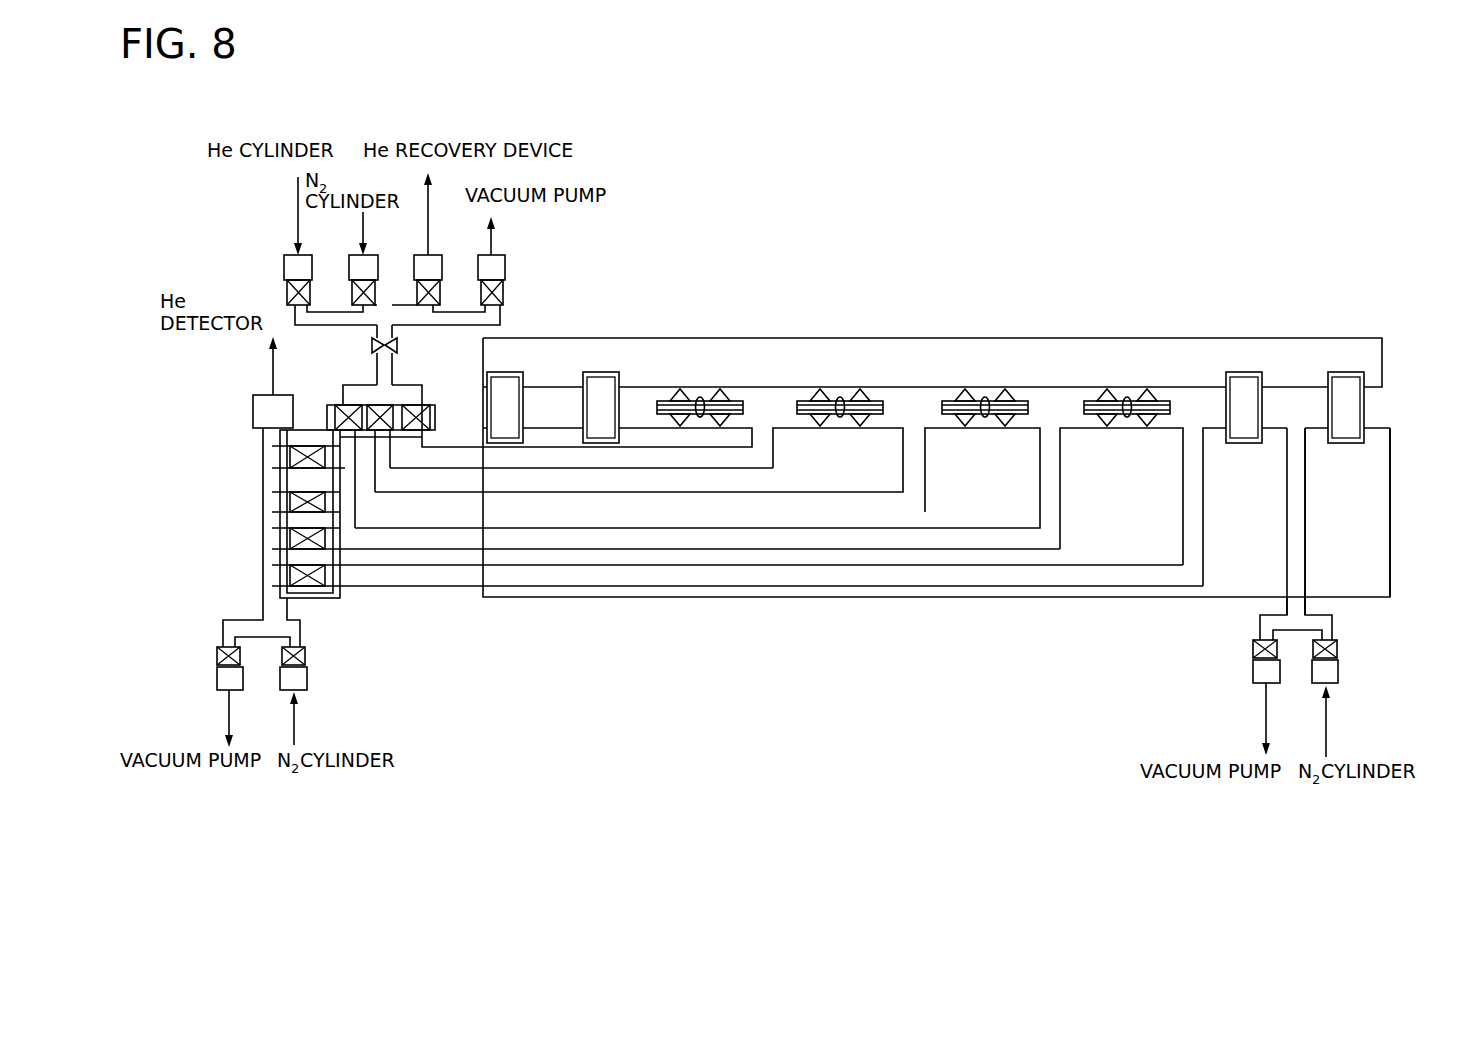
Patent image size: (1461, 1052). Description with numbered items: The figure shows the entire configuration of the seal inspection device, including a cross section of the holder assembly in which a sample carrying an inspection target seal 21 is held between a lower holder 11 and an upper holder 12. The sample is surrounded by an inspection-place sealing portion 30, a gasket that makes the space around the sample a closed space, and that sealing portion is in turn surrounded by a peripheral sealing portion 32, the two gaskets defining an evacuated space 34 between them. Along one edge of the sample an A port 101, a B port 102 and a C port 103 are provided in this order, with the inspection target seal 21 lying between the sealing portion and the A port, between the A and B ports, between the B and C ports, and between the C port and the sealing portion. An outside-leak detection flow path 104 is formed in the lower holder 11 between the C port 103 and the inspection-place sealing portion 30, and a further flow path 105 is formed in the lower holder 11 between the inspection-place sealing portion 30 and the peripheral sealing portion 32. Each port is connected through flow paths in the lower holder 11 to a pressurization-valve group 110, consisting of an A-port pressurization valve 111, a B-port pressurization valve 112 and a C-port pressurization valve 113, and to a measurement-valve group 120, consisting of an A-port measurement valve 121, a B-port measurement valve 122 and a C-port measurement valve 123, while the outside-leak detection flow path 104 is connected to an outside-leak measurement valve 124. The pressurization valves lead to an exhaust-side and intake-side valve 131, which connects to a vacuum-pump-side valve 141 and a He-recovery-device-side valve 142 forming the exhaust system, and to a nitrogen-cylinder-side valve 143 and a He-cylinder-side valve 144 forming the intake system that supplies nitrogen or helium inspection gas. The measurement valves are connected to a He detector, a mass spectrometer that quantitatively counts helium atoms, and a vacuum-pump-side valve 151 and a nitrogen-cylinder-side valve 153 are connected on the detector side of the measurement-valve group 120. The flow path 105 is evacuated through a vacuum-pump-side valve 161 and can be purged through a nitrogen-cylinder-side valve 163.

The lower holder 11 is at (1212, 597).
The upper holder 12 is at (1192, 355).
The inspection target seal 21 is at (692, 385).
The inspection-place sealing portion 30 is at (605, 372).
The peripheral sealing portion 32 is at (515, 372).
The evacuated space 34 is at (550, 408).
The A port 101 is at (763, 398).
The B port 102 is at (912, 398).
The C port 103 is at (1054, 398).
The outside-leak detection flow path 104 is at (942, 578).
The flow path 105 is at (1297, 500).
The pressurization-valve group 110 is at (382, 430).
The A-port pressurization valve 111 is at (427, 390).
The B-port pressurization valve 112 is at (393, 385).
The C-port pressurization valve 113 is at (335, 405).
The measurement-valve group 120 is at (328, 598).
The A-port measurement valve 121 is at (272, 447).
The B-port measurement valve 122 is at (272, 490).
The C-port measurement valve 123 is at (272, 528).
The outside-leak measurement valve 124 is at (272, 562).
The exhaust-side and intake-side valve 131 is at (370, 344).
The vacuum-pump-side valve 141 is at (508, 282).
The He-recovery-device-side valve 142 is at (444, 282).
The nitrogen-cylinder-side valve 143 is at (378, 282).
The He-cylinder-side valve 144 is at (312, 282).
The vacuum-pump-side valve 151 is at (217, 692).
The nitrogen-cylinder-side valve 153 is at (307, 682).
The vacuum-pump-side valve 161 is at (1253, 673).
The nitrogen-cylinder-side valve 163 is at (1338, 670).